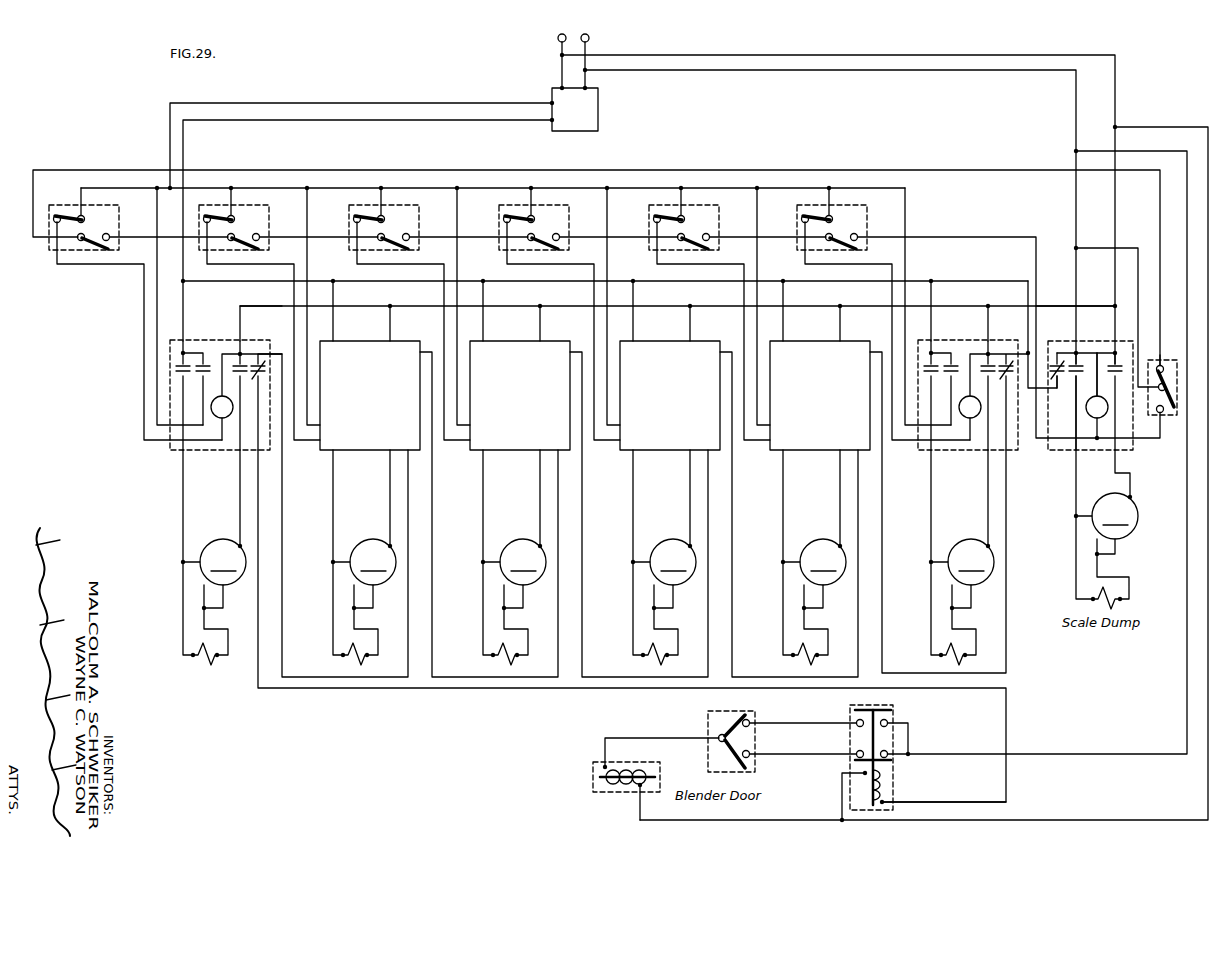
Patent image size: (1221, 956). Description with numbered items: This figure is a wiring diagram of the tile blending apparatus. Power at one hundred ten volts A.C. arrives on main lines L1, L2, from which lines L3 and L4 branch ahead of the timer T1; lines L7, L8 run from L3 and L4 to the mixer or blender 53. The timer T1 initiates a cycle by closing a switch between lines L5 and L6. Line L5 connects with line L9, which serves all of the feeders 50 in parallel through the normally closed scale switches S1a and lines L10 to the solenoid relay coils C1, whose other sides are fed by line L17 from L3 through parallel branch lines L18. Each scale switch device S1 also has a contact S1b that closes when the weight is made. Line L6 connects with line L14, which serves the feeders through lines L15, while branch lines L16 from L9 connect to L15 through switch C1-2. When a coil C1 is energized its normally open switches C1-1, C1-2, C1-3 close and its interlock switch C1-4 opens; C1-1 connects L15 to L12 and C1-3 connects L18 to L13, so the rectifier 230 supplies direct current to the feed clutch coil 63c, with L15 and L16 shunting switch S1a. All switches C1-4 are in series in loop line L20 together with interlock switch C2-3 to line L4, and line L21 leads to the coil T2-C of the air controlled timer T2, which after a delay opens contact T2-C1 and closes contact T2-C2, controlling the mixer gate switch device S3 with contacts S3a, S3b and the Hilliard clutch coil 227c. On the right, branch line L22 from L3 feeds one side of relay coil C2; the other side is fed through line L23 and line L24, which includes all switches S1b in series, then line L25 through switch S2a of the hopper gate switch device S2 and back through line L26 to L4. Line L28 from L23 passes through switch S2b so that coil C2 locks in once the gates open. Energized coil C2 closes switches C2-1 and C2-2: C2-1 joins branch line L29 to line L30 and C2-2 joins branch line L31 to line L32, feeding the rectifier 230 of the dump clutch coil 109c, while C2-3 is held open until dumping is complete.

The main power line L1 is at (558, 42).
The main power line L2 is at (589, 41).
The branch line L3 is at (718, 55).
The branch line L4 is at (710, 72).
The timer output line L5 is at (437, 103).
The timer output line L6 is at (457, 122).
The mixer supply line L7 is at (1146, 127).
The mixer supply line L8 is at (1145, 150).
The feeder supply line L9 is at (897, 190).
The relay coil line L10 is at (94, 270).
The rectifier line L12 is at (181, 535).
The rectifier line L13 is at (240, 524).
The parallel feed line L14 is at (985, 280).
The branch line L15 is at (934, 294).
The branch line L16 is at (157, 262).
The branch line L17 is at (258, 306).
The parallel branch line L18 is at (838, 314).
The loop line L20 is at (282, 597).
The timer coil line L21 is at (505, 690).
The branch line L22 is at (1080, 352).
The relay coil line L23 is at (1096, 447).
The series switch line L24 is at (994, 236).
The gate switch line L25 is at (786, 169).
The return line L26 is at (1128, 247).
The lock-in line L28 is at (1147, 442).
The branch line L29 is at (1075, 315).
The rectifier line L30 is at (1074, 496).
The branch line L31 is at (1110, 374).
The rectifier line L32 is at (1131, 484).
The timer T1 is at (600, 119).
The scale switch device S1 is at (118, 222).
The scale contact switch S1a is at (70, 206).
The scale contact switch S1b is at (850, 234).
The feeder 50 is at (176, 459).
The solenoid relay coil C1 is at (599, 397).
The normally open relay switch C1-1 is at (180, 362).
The normally open relay switch C1-2 is at (206, 362).
The normally open relay switch C1-3 is at (243, 362).
The normally closed interlock switch C1-4 is at (264, 358).
The solenoid relay coil C2 is at (1090, 395).
The normally open relay switch C2-1 is at (1074, 380).
The normally open relay switch C2-2 is at (1120, 362).
The normally closed interlock switch C2-3 is at (1054, 362).
The hopper gate switch device S2 is at (1178, 388).
The gate contact switch S2a is at (1164, 358).
The gate contact switch S2b is at (1160, 416).
The rectifier 230 is at (669, 539).
The clutch solenoid coil 63c is at (939, 660).
The clutch solenoid coil 109c is at (1119, 601).
The clutch coil 227c is at (612, 792).
The mixer gate switch device S3 is at (706, 747).
The mixer gate contact switch S3a is at (751, 729).
The mixer gate contact switch S3b is at (757, 764).
The air controlled timer T2 is at (893, 713).
The timer coil T2-C is at (896, 791).
The timer contact switch T2-C1 is at (852, 763).
The timer contact switch T2-C2 is at (852, 711).
The mixer or blender 53 is at (915, 736).